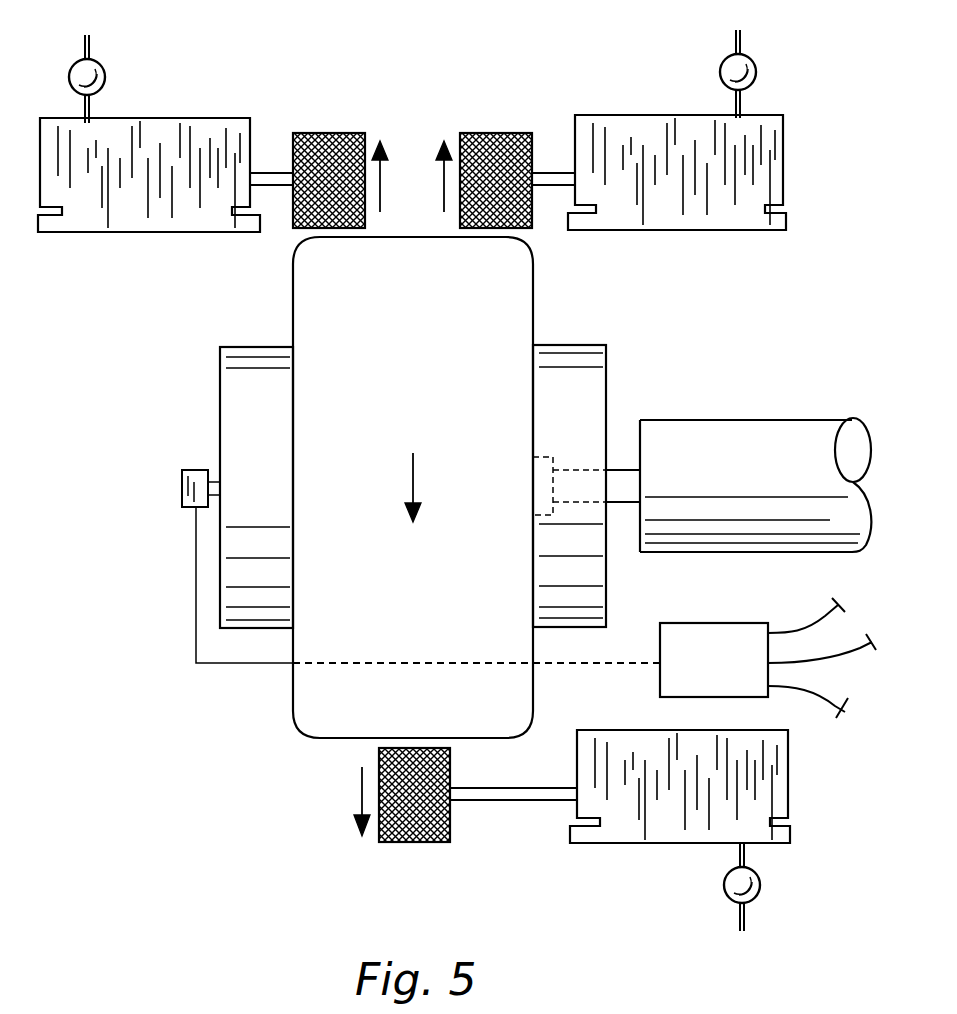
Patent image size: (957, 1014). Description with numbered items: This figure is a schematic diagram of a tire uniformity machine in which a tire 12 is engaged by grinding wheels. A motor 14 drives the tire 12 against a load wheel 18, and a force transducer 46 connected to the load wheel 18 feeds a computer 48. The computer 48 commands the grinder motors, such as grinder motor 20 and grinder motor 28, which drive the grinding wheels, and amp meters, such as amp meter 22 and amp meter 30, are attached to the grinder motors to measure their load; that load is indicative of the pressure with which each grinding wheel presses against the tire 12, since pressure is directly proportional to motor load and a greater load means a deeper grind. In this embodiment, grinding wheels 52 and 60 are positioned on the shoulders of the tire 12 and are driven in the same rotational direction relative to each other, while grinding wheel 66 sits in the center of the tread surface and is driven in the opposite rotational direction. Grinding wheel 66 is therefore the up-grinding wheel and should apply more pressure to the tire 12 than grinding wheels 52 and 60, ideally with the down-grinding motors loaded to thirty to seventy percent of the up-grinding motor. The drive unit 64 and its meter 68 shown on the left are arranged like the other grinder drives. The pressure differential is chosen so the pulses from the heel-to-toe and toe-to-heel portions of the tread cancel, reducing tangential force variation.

The tire 12 is at (293, 325).
The motor 14 is at (745, 420).
The load wheel 18 is at (220, 430).
The grinder motor 20 is at (677, 115).
The amp meter 22 is at (724, 62).
The grinder motor 28 is at (665, 843).
The amp meter 30 is at (724, 878).
The force transducer 46 is at (182, 488).
The computer 48 is at (700, 623).
The grinding wheel 52 is at (503, 133).
The grinding wheel 60 is at (330, 133).
The hydraulic cylinder 64 is at (165, 118).
The grinding wheel 66 is at (410, 842).
The valve 68 is at (102, 67).